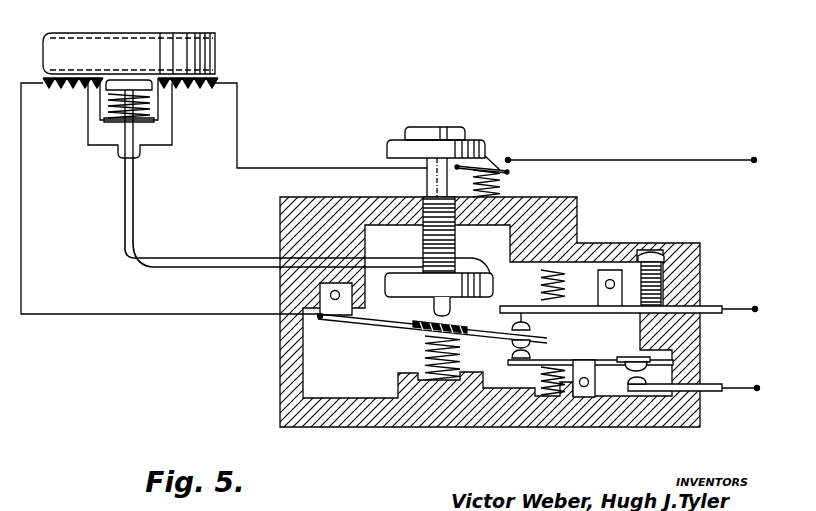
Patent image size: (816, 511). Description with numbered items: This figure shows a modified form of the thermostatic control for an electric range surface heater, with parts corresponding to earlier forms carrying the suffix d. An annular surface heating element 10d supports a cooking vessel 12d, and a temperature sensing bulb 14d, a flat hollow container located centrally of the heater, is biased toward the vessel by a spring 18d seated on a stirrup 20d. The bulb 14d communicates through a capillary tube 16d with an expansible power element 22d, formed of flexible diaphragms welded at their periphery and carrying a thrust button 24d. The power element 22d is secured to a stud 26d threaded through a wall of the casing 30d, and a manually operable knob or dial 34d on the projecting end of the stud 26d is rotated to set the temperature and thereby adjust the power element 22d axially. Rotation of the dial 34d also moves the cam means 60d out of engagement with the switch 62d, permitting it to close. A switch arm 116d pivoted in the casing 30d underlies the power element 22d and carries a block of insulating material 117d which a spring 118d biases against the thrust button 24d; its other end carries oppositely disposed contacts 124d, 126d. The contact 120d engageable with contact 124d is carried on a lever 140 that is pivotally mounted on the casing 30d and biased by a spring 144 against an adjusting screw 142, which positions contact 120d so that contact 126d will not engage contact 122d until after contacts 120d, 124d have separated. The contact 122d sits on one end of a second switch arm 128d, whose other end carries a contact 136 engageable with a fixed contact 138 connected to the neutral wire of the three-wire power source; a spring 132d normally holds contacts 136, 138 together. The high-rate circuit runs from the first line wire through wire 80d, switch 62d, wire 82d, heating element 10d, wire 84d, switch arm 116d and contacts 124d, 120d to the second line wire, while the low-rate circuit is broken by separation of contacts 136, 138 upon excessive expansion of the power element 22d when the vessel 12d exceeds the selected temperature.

The surface heating element 10d is at (198, 90).
The cooking vessel 12d is at (198, 42).
The temperature sensing bulb 14d is at (130, 78).
The capillary tube 16d is at (183, 258).
The spring 18d is at (106, 98).
The stirrup 20d is at (104, 115).
The expansible power element 22d is at (480, 258).
The thrust button 24d is at (452, 306).
The stud 26d is at (423, 197).
The casing 30d is at (698, 244).
The knob or dial 34d is at (437, 128).
The cam means 60d is at (500, 168).
The switch 62d is at (492, 183).
The wire 80d is at (612, 160).
The wire 82d is at (238, 110).
The wire 84d is at (22, 190).
The switch arm 116d is at (368, 333).
The block of insulating material 117d is at (418, 320).
The spring 118d is at (426, 343).
The contact 120d is at (530, 328).
The contact 122d is at (508, 362).
The contact 124d is at (530, 352).
The contact 126d is at (512, 345).
The switch arm 128d is at (600, 398).
The spring 132d is at (546, 398).
The contact 136 is at (650, 360).
The fixed contact 138 is at (650, 378).
The lever 140 is at (712, 305).
The adjusting screw 142 is at (646, 256).
The spring 144 is at (592, 240).